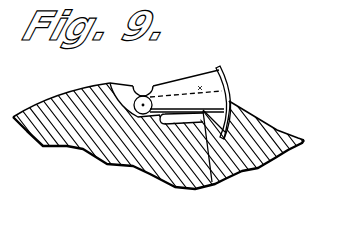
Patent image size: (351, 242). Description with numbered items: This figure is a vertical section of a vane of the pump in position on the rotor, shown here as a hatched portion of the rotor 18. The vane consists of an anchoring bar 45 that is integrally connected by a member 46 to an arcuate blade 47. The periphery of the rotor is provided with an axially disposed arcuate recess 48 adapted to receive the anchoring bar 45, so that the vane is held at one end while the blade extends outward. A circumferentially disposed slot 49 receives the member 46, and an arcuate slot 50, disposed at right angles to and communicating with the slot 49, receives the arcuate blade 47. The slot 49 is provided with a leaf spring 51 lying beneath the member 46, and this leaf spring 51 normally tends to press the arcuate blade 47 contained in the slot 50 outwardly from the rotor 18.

The body / housing section 18 is at (46, 144).
The anchoring bar 45 is at (145, 94).
The member 46 is at (189, 82).
The arcuate blade 47 is at (221, 70).
The arcuate recess 48 is at (124, 85).
The slot 49 is at (188, 121).
The arcuate slot 50 is at (232, 113).
The leaf spring 51 is at (213, 179).